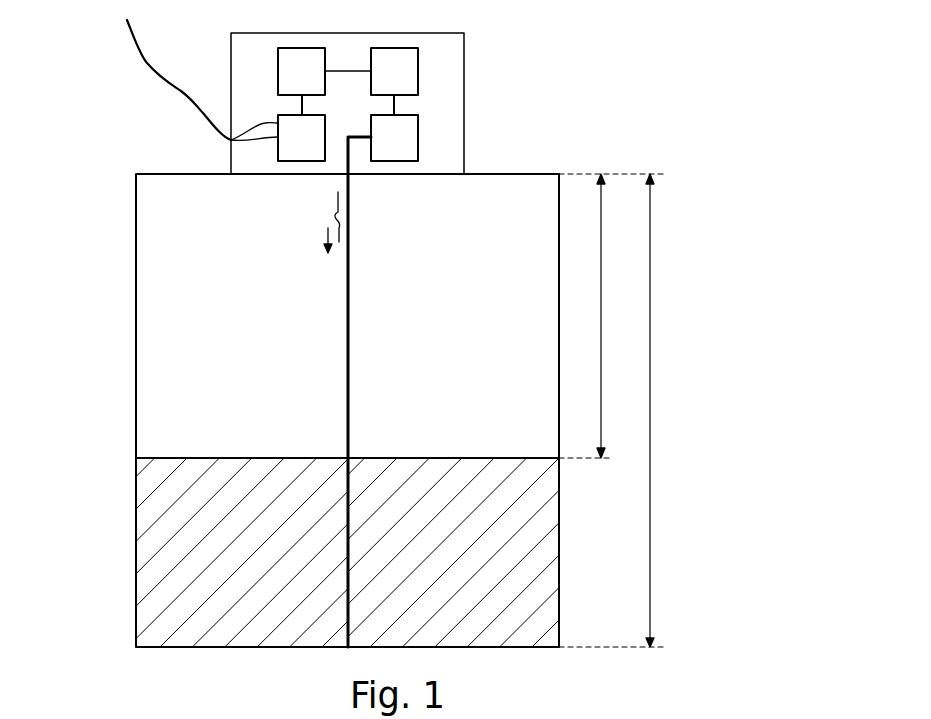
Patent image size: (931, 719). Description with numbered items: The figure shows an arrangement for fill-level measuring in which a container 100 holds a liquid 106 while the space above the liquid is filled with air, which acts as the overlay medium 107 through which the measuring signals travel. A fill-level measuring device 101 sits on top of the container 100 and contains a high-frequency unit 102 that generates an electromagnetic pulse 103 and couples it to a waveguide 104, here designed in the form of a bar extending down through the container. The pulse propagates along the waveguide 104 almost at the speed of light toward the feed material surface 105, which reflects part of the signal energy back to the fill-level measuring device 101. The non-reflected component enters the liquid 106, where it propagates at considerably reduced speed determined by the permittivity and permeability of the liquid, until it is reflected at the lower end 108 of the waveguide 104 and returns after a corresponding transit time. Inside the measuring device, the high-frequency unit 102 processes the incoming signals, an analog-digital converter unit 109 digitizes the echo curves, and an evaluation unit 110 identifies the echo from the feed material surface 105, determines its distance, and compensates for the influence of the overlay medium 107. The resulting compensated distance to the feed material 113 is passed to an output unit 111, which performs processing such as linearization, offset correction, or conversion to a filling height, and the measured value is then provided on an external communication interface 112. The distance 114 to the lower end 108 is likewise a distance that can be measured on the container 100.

The container 100 is at (136, 295).
The fill-level measuring device 101 is at (464, 95).
The high-frequency unit 102 is at (418, 151).
The electromagnetic pulse 103 is at (335, 213).
The waveguide 104 is at (348, 275).
The feed material surface 105 is at (202, 458).
The liquid 106 is at (540, 592).
The overlay medium 107 is at (547, 428).
The lower end of the waveguide 108 is at (377, 647).
The analog-digital converter unit 109 is at (418, 60).
The evaluation unit 110 is at (278, 55).
The output unit 111 is at (231, 140).
The external communication interface 112 is at (145, 63).
The compensated distance to the feed material 113 is at (638, 318).
The distance to the lower end of the waveguide 114 is at (698, 238).